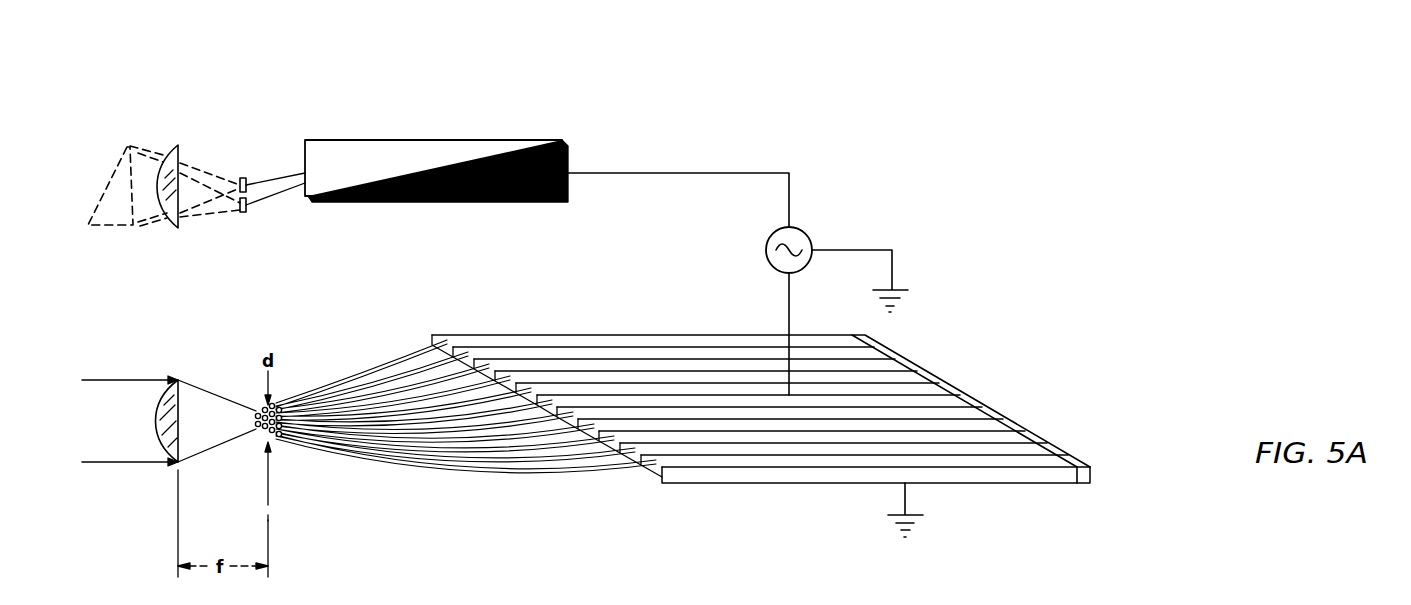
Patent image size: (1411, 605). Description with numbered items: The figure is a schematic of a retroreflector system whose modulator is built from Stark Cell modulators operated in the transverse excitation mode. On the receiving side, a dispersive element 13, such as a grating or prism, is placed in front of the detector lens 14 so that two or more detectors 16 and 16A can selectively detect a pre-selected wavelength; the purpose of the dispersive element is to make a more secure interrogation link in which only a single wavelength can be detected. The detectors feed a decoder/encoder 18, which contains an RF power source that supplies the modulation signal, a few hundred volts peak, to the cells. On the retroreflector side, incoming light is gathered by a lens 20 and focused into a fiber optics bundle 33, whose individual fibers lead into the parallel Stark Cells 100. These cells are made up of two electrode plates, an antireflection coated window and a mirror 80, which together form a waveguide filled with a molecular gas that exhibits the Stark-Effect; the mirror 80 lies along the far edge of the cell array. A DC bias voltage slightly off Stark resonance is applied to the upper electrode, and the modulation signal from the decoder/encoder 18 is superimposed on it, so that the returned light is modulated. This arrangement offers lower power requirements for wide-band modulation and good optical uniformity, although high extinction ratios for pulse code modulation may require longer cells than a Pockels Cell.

The dispersive element 13 is at (120, 157).
The detector lens 14 is at (180, 143).
The detector 16 is at (247, 179).
The detector 16A is at (243, 214).
The decoder/encoder 18 is at (548, 182).
The lens 20 is at (180, 407).
The fiber optics bundle 33 is at (343, 453).
The parallel Stark Cells 100 is at (500, 335).
The mirror 80 is at (1183, 548).